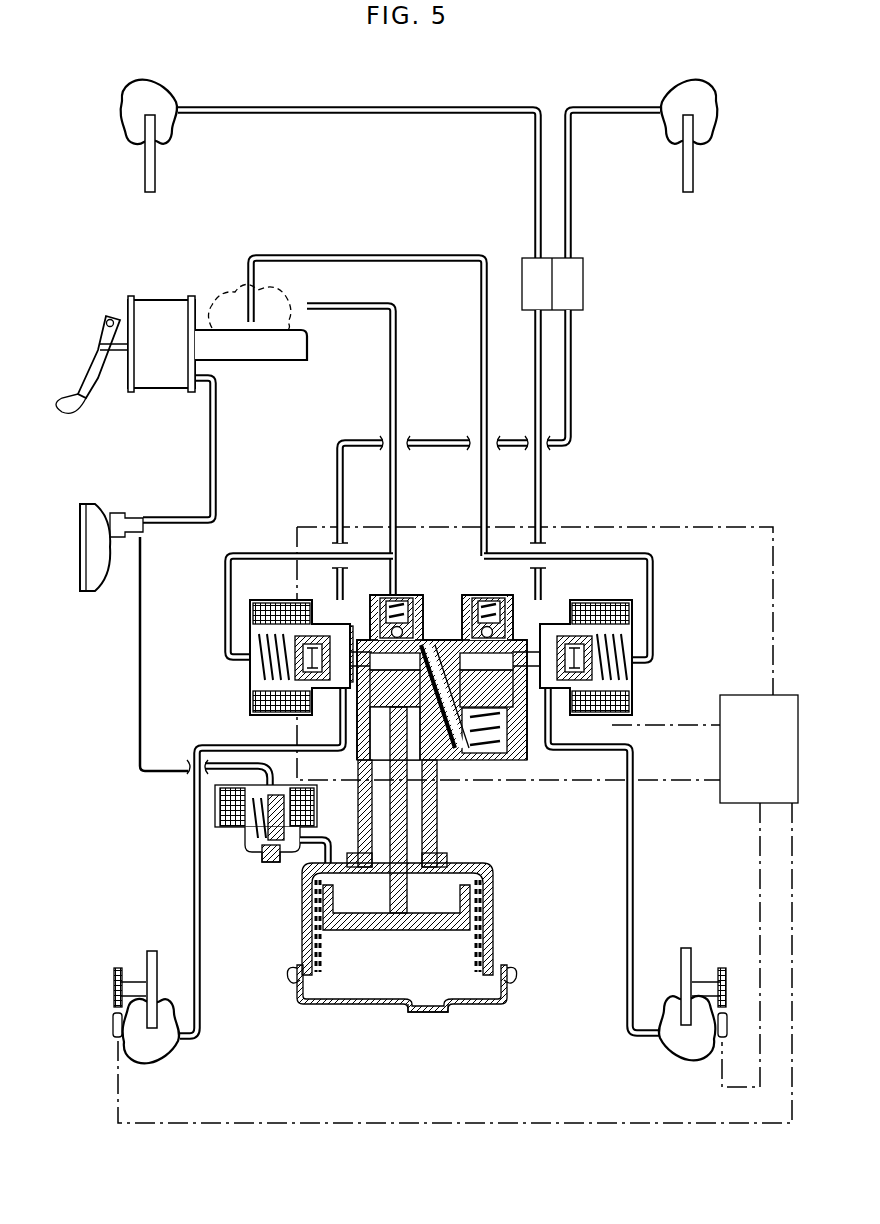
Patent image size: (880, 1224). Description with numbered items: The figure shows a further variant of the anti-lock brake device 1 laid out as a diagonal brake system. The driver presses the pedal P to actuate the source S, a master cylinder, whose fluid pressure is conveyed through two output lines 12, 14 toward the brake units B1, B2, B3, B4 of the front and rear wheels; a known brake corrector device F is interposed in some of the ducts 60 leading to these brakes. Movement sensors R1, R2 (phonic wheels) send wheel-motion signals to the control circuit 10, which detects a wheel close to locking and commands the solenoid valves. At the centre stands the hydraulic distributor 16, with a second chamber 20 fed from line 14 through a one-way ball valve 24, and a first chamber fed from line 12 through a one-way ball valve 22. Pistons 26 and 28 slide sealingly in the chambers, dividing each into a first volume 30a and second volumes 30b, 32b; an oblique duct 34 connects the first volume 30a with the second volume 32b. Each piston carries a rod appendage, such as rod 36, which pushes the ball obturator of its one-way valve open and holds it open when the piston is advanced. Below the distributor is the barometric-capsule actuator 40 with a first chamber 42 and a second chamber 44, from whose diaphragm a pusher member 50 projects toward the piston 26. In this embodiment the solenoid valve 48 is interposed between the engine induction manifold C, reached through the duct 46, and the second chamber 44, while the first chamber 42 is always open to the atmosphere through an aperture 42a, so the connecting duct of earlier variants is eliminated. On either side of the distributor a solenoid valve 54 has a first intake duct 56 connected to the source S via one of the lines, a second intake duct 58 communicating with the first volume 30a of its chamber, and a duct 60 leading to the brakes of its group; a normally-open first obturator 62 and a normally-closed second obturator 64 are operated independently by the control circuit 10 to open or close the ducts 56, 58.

The device 1 is at (603, 470).
The control circuit 10 is at (745, 695).
The output line 12 is at (401, 328).
The output line 14 is at (374, 257).
The hydraulic distributor 16 is at (431, 490).
The second chamber 20 is at (508, 766).
The one-way ball valve 22 is at (420, 597).
The one-way ball valve 24 is at (512, 597).
The piston 26 is at (358, 696).
The piston 28 is at (528, 740).
The first volume 30a is at (362, 598).
The second volume 30b is at (378, 758).
The second volume 32b is at (472, 762).
The duct 34 is at (452, 640).
The rod appendage 36 is at (450, 668).
The barometric-capsule actuator 40 is at (419, 910).
The first chamber 42 is at (457, 972).
The aperture 42a is at (429, 1026).
The second chamber 44 is at (445, 887).
The duct 46 is at (172, 772).
The solenoid valve 48 is at (231, 855).
The pusher member 50 is at (388, 868).
The solenoid valve 54 is at (262, 579).
The first intake duct 56 is at (228, 626).
The second intake duct 58 is at (322, 600).
The duct 60 is at (336, 480).
The first obturator 62 is at (273, 627).
The second obturator 64 is at (285, 636).
The brake unit B1 is at (687, 1047).
The brake unit B2 is at (148, 1047).
The brake unit B3 is at (690, 100).
The brake unit B4 is at (153, 97).
The movement sensor R1 is at (726, 978).
The movement sensor R2 is at (113, 980).
The induction manifold C is at (95, 522).
The brake corrector device F is at (562, 285).
The pedal P is at (90, 372).
The source S is at (253, 343).